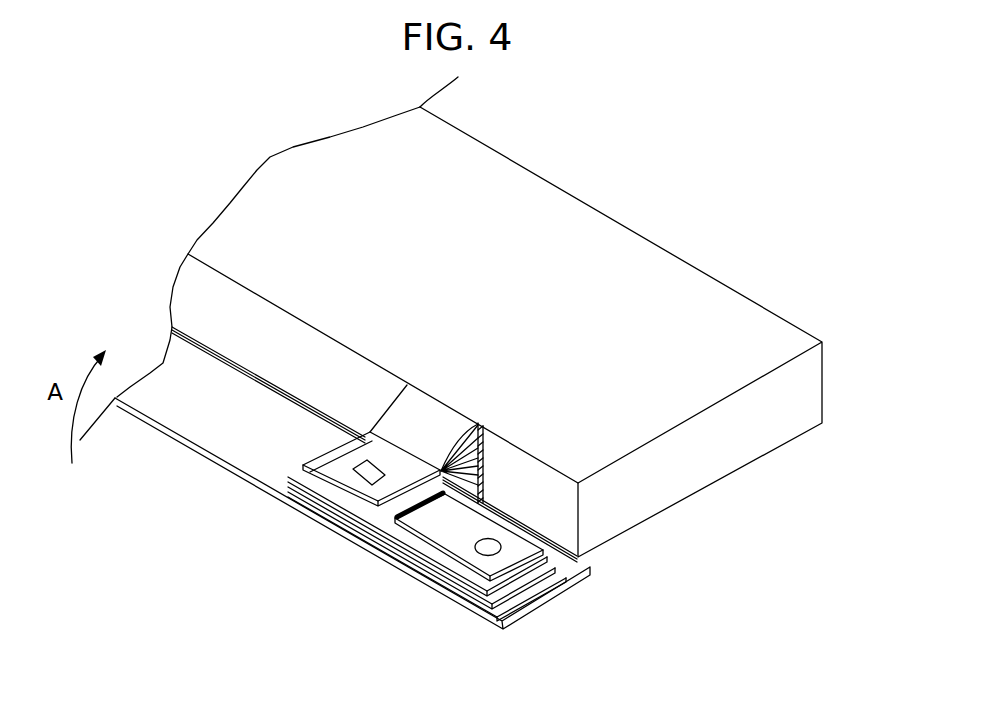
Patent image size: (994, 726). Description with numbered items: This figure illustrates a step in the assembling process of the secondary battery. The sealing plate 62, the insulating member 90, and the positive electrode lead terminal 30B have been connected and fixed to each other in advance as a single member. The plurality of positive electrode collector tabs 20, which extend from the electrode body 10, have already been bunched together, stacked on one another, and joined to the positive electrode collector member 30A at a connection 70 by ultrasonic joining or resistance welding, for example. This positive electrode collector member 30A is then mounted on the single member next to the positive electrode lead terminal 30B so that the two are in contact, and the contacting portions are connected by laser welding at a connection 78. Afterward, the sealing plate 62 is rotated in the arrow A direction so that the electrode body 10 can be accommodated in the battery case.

The electrode body 10 is at (672, 307).
The positive electrode collector tabs 20 is at (484, 426).
The positive electrode collector member 30A is at (314, 470).
The positive electrode lead terminal 30B is at (555, 568).
The sealing plate 62 is at (217, 408).
The connection 70 is at (347, 495).
The connection 78 is at (445, 520).
The insulating member 90 is at (528, 598).